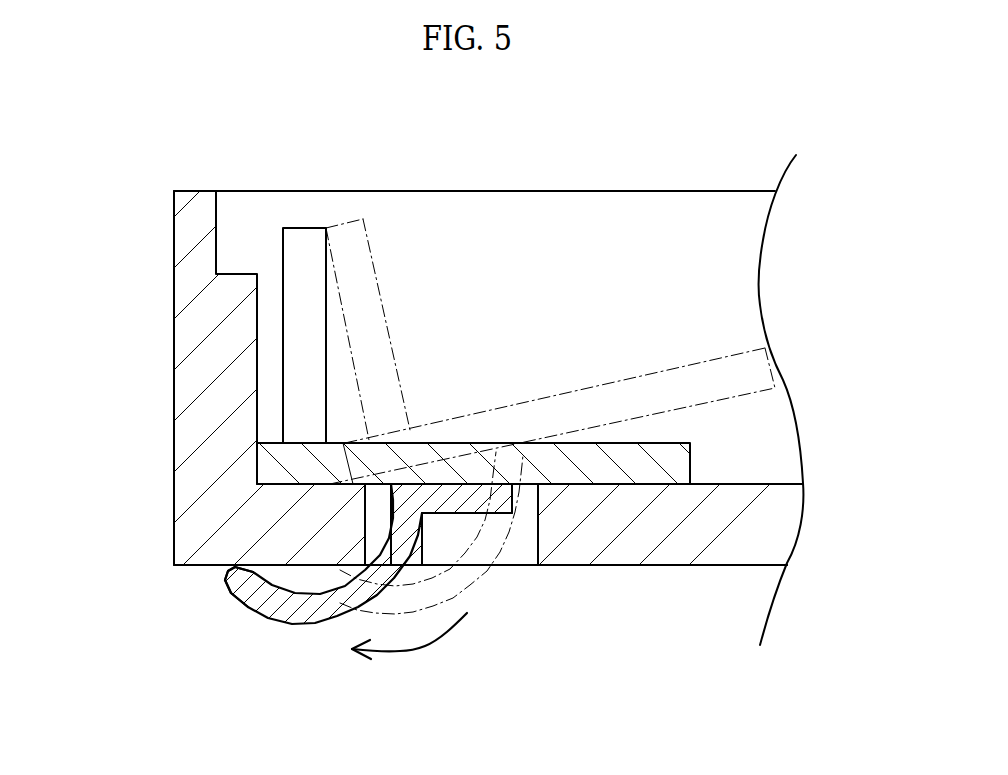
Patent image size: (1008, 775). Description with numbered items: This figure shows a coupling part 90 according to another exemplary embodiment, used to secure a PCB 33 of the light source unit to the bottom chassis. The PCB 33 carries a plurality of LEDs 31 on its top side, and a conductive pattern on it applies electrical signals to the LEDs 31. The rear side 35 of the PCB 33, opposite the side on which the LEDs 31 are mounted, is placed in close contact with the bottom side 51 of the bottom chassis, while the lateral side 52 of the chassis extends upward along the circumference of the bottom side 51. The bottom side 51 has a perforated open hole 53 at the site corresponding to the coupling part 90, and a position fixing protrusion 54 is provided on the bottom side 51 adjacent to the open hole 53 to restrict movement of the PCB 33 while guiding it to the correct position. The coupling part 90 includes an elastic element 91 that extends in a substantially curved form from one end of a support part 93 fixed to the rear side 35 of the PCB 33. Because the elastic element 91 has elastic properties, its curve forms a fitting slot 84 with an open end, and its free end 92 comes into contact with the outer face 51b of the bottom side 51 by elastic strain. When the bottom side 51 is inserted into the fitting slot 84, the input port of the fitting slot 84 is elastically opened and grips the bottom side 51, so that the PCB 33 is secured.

The LED 31 is at (303, 243).
The PCB 33 is at (687, 452).
The rear side of the PCB 35 is at (520, 480).
The bottom side 51 is at (778, 525).
The outer face of the bottom side 51b is at (658, 567).
The lateral side 52 is at (192, 373).
The open hole 53 is at (530, 513).
The position fixing protrusion 54 is at (703, 484).
The fitting slot 84 is at (378, 527).
The coupling part 90 is at (296, 648).
The elastic element 91 is at (330, 620).
The free end 92 is at (223, 578).
The support part 93 is at (486, 447).